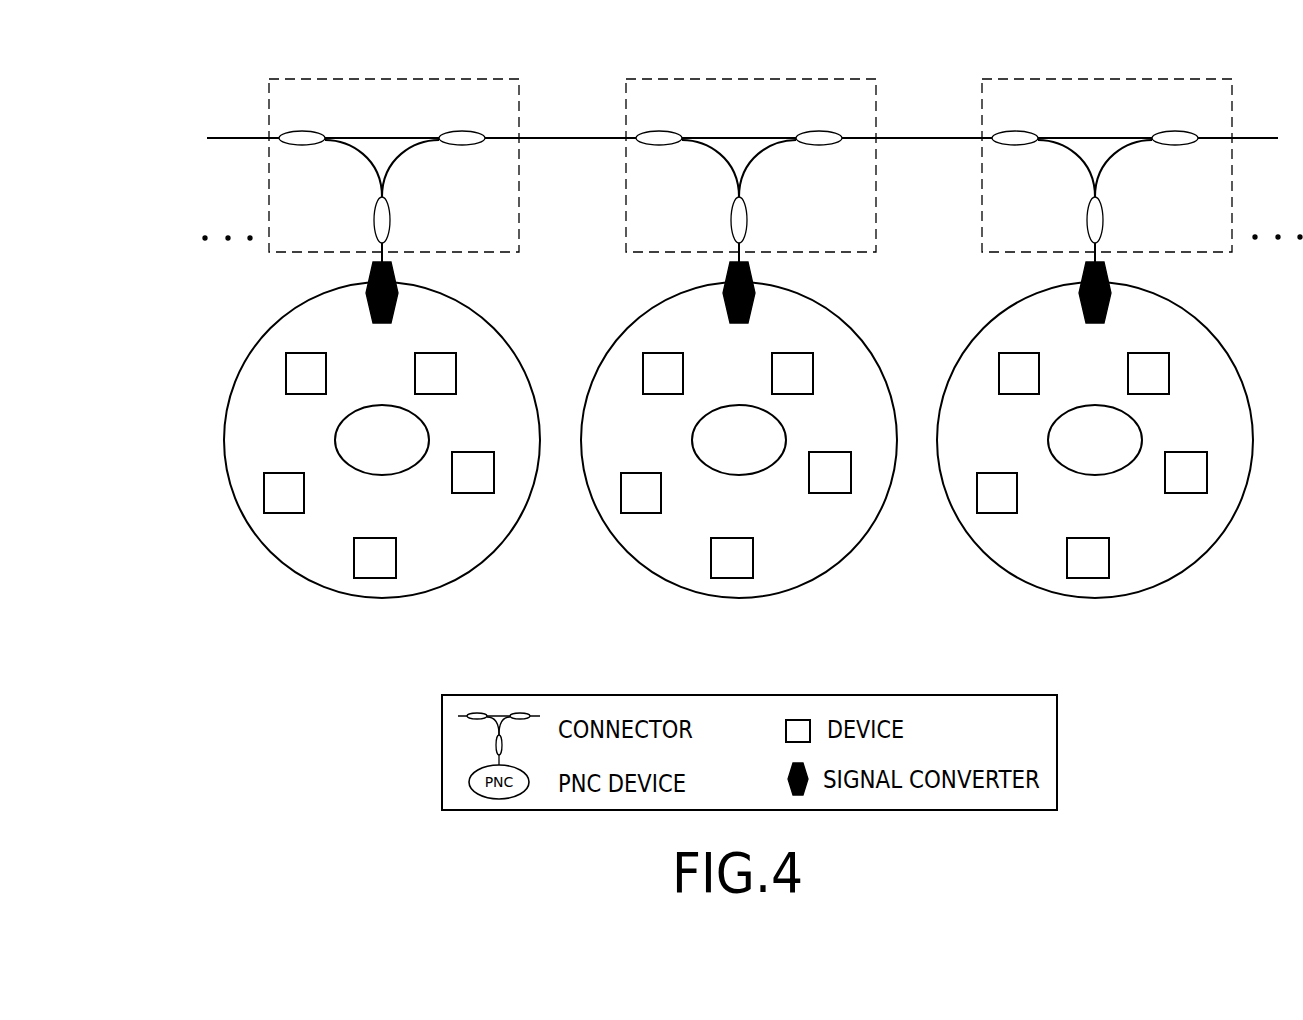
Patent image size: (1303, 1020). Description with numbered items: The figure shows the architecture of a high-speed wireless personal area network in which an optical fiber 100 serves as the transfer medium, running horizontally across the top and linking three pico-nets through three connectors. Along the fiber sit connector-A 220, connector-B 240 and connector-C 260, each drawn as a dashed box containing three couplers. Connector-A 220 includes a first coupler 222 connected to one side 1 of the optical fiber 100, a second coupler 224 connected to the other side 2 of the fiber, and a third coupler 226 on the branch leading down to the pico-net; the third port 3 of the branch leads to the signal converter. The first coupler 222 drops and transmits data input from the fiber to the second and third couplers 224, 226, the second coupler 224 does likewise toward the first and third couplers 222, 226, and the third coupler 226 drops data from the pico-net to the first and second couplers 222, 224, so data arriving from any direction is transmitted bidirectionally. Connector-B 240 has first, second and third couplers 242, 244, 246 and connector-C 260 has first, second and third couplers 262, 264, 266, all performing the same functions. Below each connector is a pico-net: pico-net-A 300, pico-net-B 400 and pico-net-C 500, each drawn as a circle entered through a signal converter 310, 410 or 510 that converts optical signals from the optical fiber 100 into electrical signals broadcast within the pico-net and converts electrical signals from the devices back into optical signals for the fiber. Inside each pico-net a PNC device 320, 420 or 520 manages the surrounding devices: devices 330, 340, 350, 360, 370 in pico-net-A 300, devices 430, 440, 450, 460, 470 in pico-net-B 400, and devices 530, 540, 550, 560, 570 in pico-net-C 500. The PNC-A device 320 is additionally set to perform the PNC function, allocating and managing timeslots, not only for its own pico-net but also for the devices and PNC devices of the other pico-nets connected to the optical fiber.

The optical fiber 100 is at (218, 134).
The one side of the optical fiber 1 is at (257, 120).
The other side of the optical fiber 2 is at (515, 122).
The third port 3 is at (369, 243).
The connector-A 220 is at (395, 79).
The first coupler 222 is at (303, 131).
The second coupler 224 is at (463, 131).
The third coupler 226 is at (392, 223).
The connector-B 240 is at (752, 79).
The first coupler 242 is at (660, 131).
The second coupler 244 is at (820, 131).
The third coupler 246 is at (749, 223).
The connector-C 260 is at (1108, 79).
The first coupler 262 is at (1016, 131).
The second coupler 264 is at (1176, 131).
The third coupler 266 is at (1105, 223).
The pico-net-A 300 is at (472, 306).
The signal converter-A 310 is at (399, 276).
The PNC-A device 320 is at (382, 405).
The device 330 is at (310, 353).
The device 340 is at (280, 473).
The device 350 is at (379, 538).
The device 360 is at (437, 353).
The device 370 is at (475, 452).
The pico-net-B 400 is at (829, 306).
The signal converter 410 is at (756, 276).
The PNC device 420 is at (739, 405).
The device 430 is at (667, 353).
The device 440 is at (637, 473).
The device 450 is at (736, 538).
The device 460 is at (794, 353).
The device 470 is at (832, 452).
The pico-net-C 500 is at (1185, 306).
The signal converter 510 is at (1112, 276).
The PNC device 520 is at (1095, 405).
The device 530 is at (1023, 353).
The device 540 is at (993, 473).
The device 550 is at (1092, 538).
The device 560 is at (1150, 353).
The device 570 is at (1188, 452).